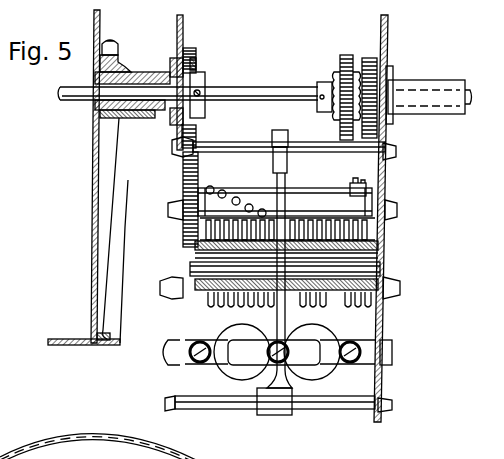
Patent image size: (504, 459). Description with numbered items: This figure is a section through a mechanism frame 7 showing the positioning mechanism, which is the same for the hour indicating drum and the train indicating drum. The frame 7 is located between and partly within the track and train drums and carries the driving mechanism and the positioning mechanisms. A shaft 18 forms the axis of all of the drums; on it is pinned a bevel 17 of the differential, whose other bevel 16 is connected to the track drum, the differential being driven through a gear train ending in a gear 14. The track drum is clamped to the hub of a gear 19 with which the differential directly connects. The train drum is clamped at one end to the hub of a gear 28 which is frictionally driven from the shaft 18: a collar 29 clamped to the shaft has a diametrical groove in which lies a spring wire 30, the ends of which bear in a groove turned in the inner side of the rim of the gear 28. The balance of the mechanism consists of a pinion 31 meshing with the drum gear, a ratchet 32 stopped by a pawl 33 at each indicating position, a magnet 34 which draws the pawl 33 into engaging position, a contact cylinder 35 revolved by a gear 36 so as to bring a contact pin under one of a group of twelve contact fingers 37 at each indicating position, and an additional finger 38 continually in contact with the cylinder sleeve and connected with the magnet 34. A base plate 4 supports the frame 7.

The base plate 4 is at (104, 342).
The frame 7 is at (383, 385).
The gear 14 is at (340, 57).
The bevel 16 is at (358, 73).
The bevel 17 is at (332, 80).
The shaft 18 is at (262, 88).
The gear 19 is at (370, 58).
The gear 28 is at (192, 50).
The collar 29 is at (205, 84).
The spring wire 30 is at (196, 63).
The pinion 31 is at (197, 133).
The ratchet 32 is at (288, 137).
The pawl 33 is at (286, 178).
The magnet 34 is at (322, 366).
The contact cylinder 35 is at (263, 190).
The gear 36 is at (198, 172).
The contact fingers 37 is at (210, 300).
The additional finger 38 is at (365, 186).